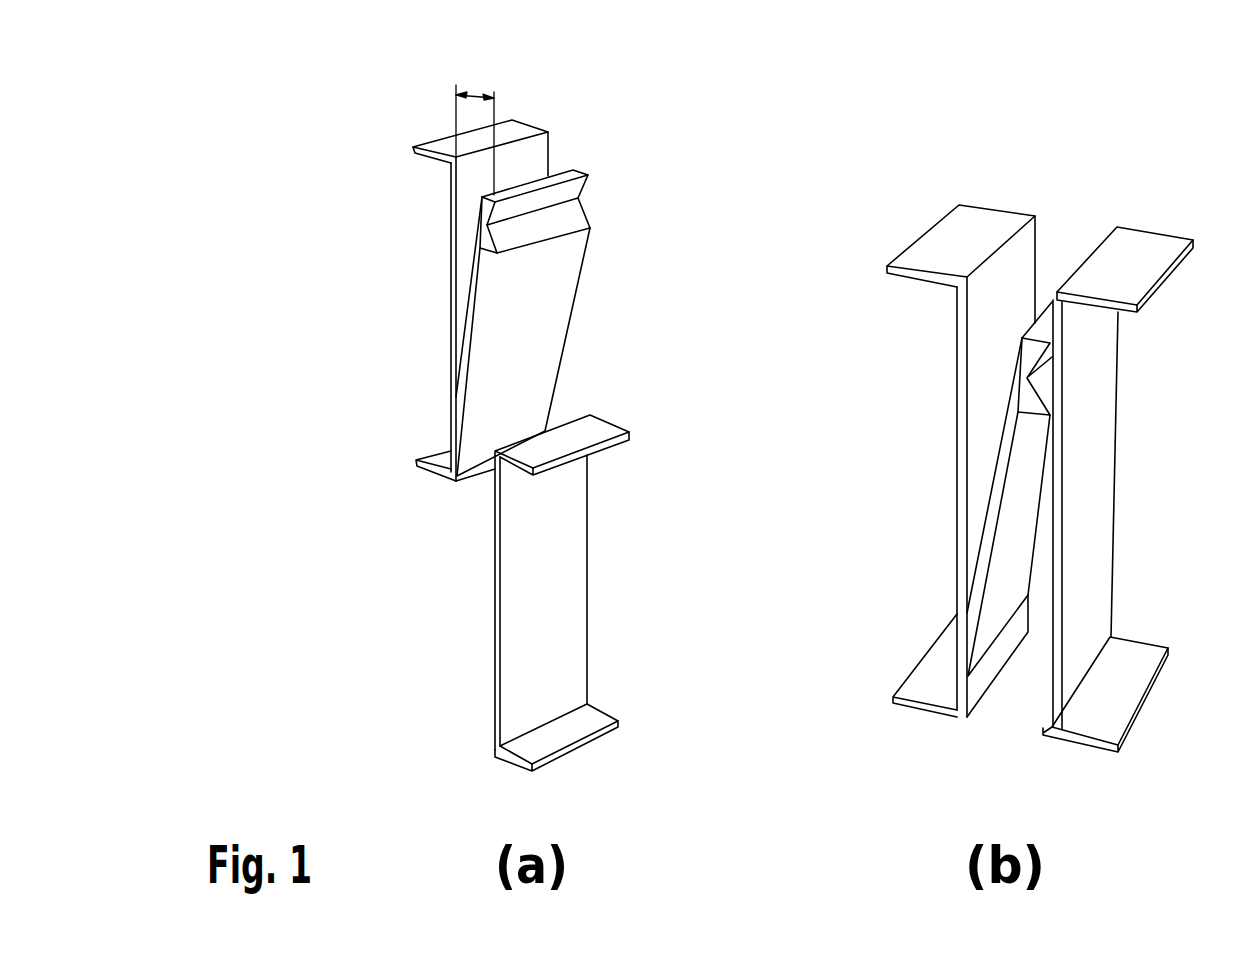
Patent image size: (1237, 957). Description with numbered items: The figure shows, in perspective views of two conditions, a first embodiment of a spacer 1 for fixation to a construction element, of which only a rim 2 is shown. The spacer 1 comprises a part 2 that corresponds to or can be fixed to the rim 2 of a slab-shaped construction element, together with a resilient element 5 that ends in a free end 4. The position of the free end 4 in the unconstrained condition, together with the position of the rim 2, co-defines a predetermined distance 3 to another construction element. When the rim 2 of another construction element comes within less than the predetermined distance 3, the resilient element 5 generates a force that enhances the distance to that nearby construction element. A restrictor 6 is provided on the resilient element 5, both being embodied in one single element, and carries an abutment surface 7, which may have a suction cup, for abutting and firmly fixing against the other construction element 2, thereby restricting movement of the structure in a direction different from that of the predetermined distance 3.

The spacer 1 is at (588, 279).
The rim 2 is at (463, 280).
The predetermined distance 3 is at (475, 95).
The free end 4 is at (588, 176).
The resilient element 5 is at (530, 326).
The restrictor 6 is at (486, 244).
The abutment surface 7 is at (560, 221).